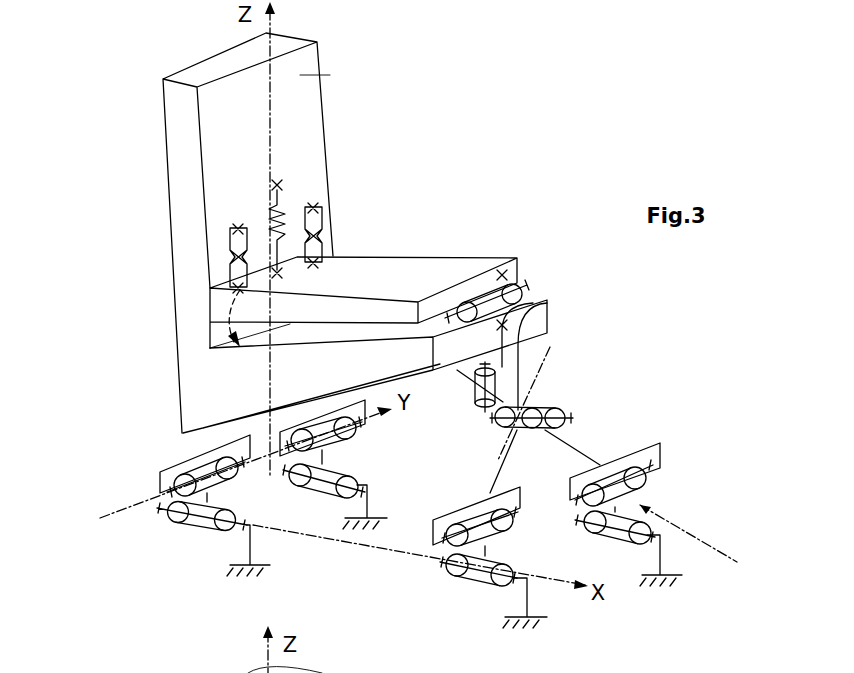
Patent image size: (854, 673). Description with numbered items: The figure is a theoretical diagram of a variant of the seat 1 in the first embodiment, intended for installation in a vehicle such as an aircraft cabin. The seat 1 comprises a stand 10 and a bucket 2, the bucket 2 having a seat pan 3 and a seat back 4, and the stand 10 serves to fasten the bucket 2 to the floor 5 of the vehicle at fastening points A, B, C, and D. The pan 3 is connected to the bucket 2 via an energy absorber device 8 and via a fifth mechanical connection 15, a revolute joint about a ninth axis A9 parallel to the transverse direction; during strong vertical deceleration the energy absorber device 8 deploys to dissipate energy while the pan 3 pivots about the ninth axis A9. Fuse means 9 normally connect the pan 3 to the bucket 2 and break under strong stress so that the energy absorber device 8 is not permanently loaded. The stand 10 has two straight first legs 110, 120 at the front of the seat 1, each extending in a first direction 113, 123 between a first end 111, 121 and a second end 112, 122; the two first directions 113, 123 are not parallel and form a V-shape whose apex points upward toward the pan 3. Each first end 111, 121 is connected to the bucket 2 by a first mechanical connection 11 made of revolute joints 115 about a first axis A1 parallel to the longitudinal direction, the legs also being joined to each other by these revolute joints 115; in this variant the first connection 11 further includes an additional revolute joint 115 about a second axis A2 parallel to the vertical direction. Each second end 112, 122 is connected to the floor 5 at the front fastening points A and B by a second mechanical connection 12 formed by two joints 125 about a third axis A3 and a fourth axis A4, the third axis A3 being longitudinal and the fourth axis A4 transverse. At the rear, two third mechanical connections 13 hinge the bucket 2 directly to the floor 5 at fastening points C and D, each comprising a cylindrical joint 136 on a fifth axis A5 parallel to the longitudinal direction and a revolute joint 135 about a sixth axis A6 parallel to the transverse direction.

The seat 1 is at (482, 186).
The bucket 2 is at (182, 175).
The seat pan 3 is at (422, 272).
The seat back 4 is at (305, 90).
The floor 5 is at (262, 530).
The energy absorber device 8 is at (268, 213).
The fuse means 9 is at (230, 247).
The stand 10 is at (124, 407).
The first mechanical connection 11 is at (558, 392).
The second mechanical connection 12 is at (433, 566).
The third mechanical connection 13 is at (156, 490).
The fifth mechanical connection 15 is at (486, 280).
The first leg 110 is at (578, 452).
The first end 111 is at (572, 480).
The second end 112 is at (600, 463).
The first direction 113 is at (742, 557).
The revolute joint 115 is at (548, 308).
The first leg 120 is at (487, 462).
The first end 121 is at (510, 438).
The second end 122 is at (467, 490).
The first direction 123 is at (550, 347).
The revolute joint 125 is at (483, 540).
The revolute joint 135 is at (160, 472).
The cylindrical joint 136 is at (203, 526).
The first axis A1 is at (573, 415).
The second axis A2 is at (478, 395).
The third axis A3 is at (510, 590).
The fourth axis A4 is at (650, 490).
The fifth axis A5 is at (170, 510).
The sixth axis A6 is at (200, 460).
The ninth axis A9 is at (527, 287).
The fastening point A is at (680, 575).
The fastening point B is at (548, 605).
The fastening point C is at (380, 517).
The fastening point D is at (233, 545).